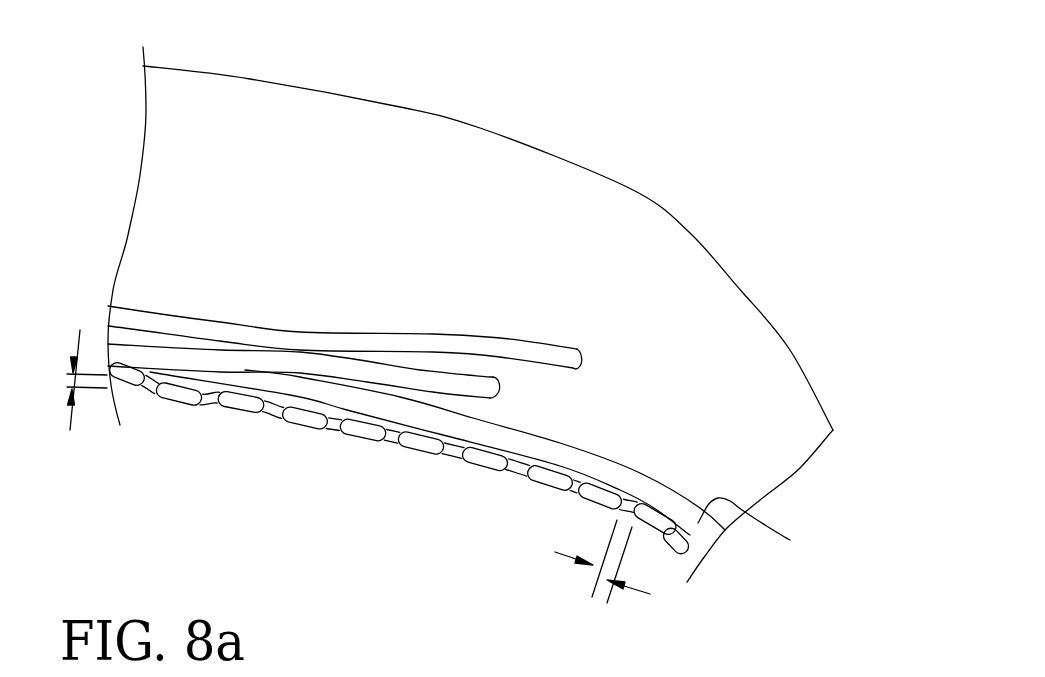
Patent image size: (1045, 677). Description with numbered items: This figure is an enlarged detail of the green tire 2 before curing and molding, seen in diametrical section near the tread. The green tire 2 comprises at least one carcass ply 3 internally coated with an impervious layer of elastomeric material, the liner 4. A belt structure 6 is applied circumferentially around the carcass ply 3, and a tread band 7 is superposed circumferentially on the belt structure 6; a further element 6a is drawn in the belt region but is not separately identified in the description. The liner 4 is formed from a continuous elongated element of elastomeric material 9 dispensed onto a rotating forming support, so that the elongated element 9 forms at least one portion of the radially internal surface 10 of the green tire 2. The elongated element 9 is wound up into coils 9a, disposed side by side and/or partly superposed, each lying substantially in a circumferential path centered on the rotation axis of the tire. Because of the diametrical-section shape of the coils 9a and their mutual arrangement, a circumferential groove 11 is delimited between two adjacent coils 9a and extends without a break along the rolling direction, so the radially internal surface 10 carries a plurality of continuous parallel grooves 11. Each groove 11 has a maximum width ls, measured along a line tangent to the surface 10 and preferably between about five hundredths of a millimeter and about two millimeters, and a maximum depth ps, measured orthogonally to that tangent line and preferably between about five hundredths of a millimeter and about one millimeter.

The green tire 2 is at (707, 141).
The carcass ply 3 is at (760, 506).
The liner 4 is at (463, 328).
The belt structure 6 is at (366, 300).
The belt ply edge strip 6a is at (563, 355).
The tread band 7 is at (503, 72).
The continuous elongated element of elastomeric material 9 is at (180, 415).
The coils 9a is at (243, 397).
The radially internal surface 10 is at (483, 488).
The circumferential groove 11 is at (273, 418).
The depth of circumferential groove ps is at (75, 338).
The width of circumferential groove ls is at (602, 589).